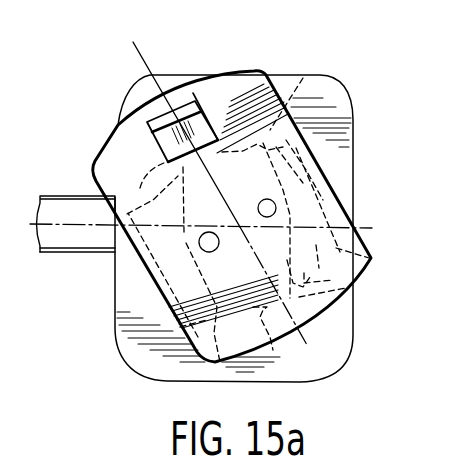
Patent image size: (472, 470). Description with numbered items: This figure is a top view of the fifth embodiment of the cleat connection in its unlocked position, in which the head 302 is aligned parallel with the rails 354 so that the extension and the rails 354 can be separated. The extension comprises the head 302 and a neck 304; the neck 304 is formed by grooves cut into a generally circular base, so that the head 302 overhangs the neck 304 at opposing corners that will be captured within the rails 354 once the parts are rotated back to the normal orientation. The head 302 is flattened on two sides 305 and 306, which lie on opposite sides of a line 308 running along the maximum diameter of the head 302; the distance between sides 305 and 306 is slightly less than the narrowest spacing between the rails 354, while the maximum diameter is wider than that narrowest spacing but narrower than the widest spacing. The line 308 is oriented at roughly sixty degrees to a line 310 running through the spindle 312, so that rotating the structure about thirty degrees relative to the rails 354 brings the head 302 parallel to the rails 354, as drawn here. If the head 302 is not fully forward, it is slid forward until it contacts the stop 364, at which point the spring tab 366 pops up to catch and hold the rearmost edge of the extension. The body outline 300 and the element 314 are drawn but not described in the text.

The housing 300 is at (352, 117).
The head 302 is at (356, 292).
The neck 304 is at (169, 257).
The flattened side 305 is at (148, 273).
The flattened side 306 is at (270, 186).
The line 308 is at (143, 62).
The line 310 is at (63, 223).
The spindle 312 is at (90, 242).
The pin 314 is at (373, 257).
The rails 354 is at (303, 78).
The stop 364 is at (342, 304).
The spring tab 366 is at (197, 101).